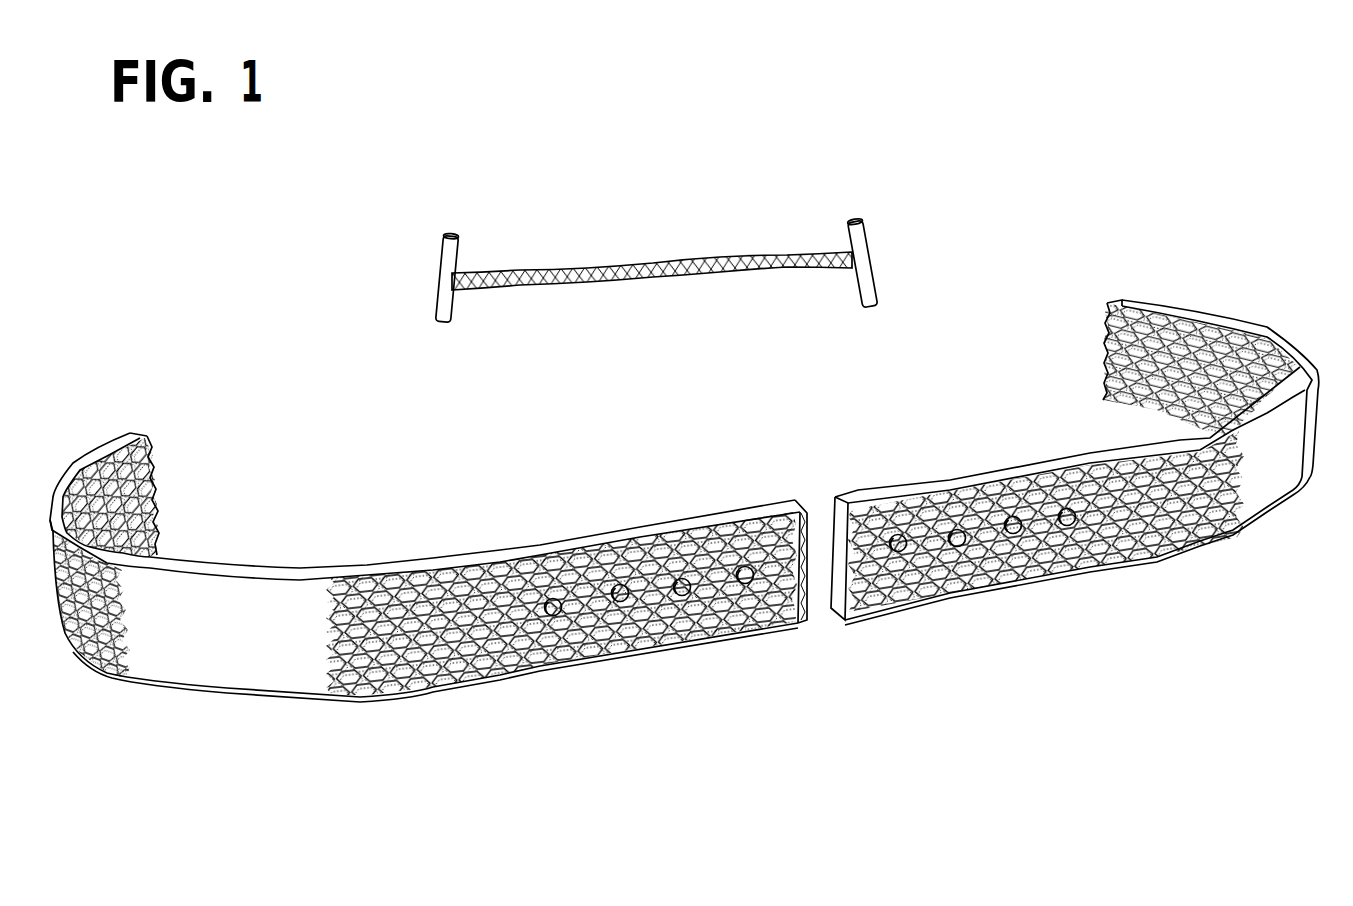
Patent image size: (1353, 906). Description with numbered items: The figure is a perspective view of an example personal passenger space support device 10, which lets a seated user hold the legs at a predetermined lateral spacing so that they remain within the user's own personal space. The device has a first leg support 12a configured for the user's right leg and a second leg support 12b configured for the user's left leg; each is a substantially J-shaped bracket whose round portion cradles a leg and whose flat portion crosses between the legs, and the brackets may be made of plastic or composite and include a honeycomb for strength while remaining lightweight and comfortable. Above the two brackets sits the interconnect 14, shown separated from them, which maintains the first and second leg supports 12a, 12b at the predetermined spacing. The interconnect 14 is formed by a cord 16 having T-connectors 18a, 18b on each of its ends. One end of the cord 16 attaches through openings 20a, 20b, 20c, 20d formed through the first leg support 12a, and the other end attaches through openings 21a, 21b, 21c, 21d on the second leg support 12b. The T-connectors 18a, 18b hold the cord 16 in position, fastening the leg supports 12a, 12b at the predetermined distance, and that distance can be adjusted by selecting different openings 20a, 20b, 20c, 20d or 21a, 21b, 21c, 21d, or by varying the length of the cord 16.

The personal passenger space support device 10 is at (1262, 294).
The first leg support 12a is at (946, 470).
The second leg support 12b is at (503, 547).
The interconnect 14 is at (786, 191).
The cord 16 is at (673, 262).
The T-connector 18a is at (858, 218).
The T-connector 18b is at (453, 233).
The opening 20a is at (900, 553).
The opening 20b is at (961, 548).
The opening 20c is at (1015, 534).
The opening 20d is at (1070, 526).
The opening 21a is at (556, 616).
The opening 21b is at (622, 602).
The opening 21c is at (684, 596).
The opening 21d is at (748, 584).